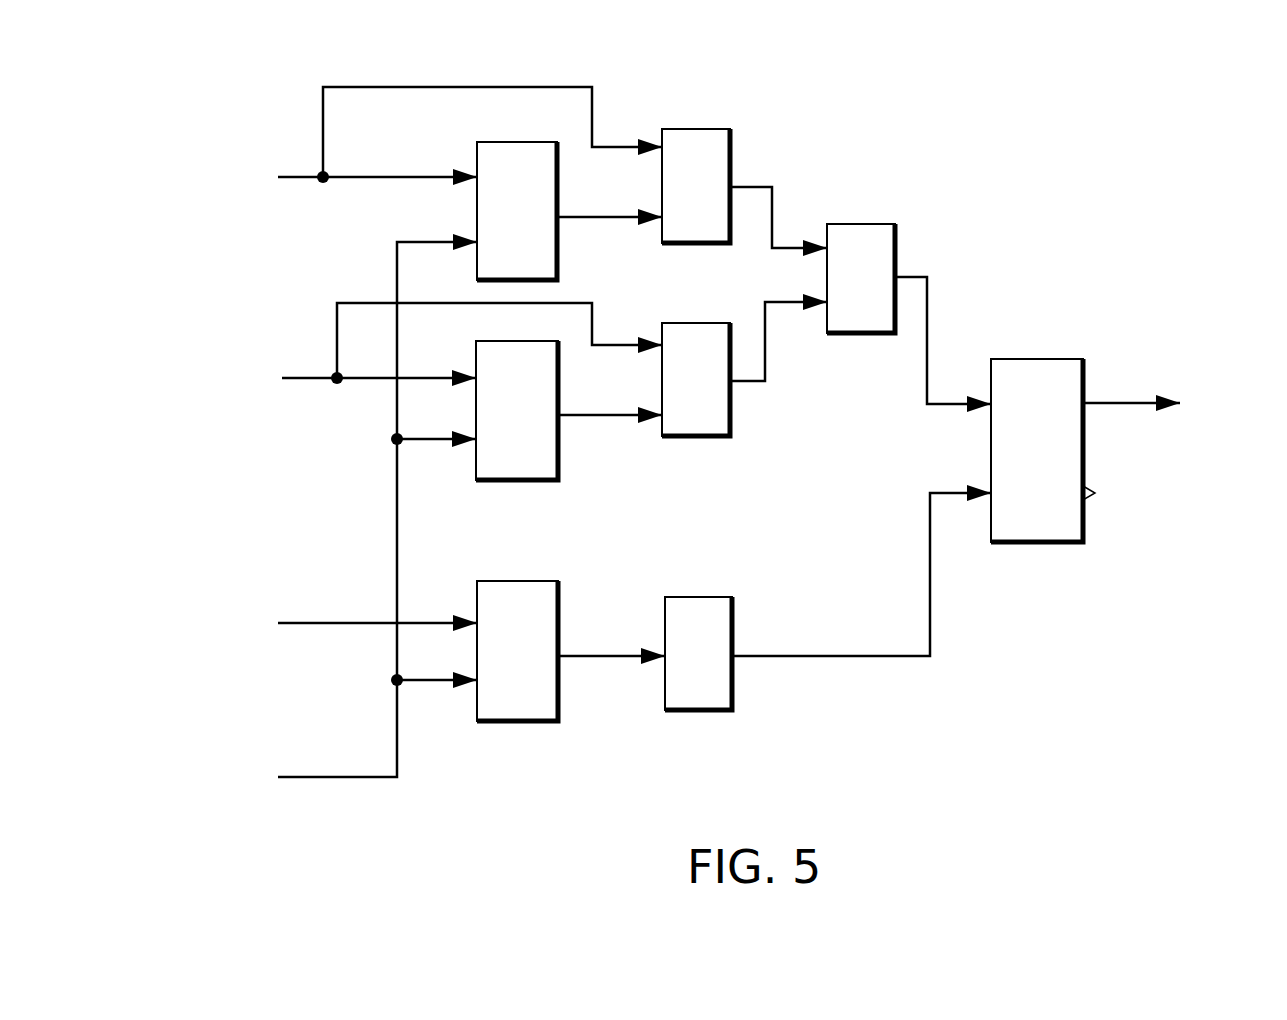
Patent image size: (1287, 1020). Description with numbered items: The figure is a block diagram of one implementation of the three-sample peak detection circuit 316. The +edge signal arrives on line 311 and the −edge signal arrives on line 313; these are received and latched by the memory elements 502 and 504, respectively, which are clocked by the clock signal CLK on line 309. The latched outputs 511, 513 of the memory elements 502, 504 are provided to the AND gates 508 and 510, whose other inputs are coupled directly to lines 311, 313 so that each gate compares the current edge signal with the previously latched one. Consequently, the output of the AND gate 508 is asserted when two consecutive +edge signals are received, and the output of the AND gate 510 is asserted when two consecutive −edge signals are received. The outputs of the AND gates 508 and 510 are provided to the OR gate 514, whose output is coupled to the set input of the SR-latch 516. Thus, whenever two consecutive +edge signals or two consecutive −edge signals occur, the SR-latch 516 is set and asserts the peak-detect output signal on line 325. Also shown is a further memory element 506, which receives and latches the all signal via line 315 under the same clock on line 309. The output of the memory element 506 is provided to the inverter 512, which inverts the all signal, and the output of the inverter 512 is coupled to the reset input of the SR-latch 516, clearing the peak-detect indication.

The three-sample peak detection circuit 316 is at (1170, 58).
The line 311 is at (300, 175).
The line 313 is at (305, 375).
The line 315 is at (330, 620).
The line 309 is at (336, 780).
The line 325 is at (1127, 400).
The memory element 502 is at (521, 140).
The memory element 504 is at (518, 482).
The memory element 506 is at (518, 723).
The AND gate 508 is at (695, 129).
The AND gate 510 is at (708, 437).
The first flip-flop Q output 511 is at (597, 222).
The second flip-flop Q output 513 is at (603, 420).
The inverter 512 is at (703, 712).
The OR gate 514 is at (863, 224).
The SR-latch 516 is at (1036, 358).